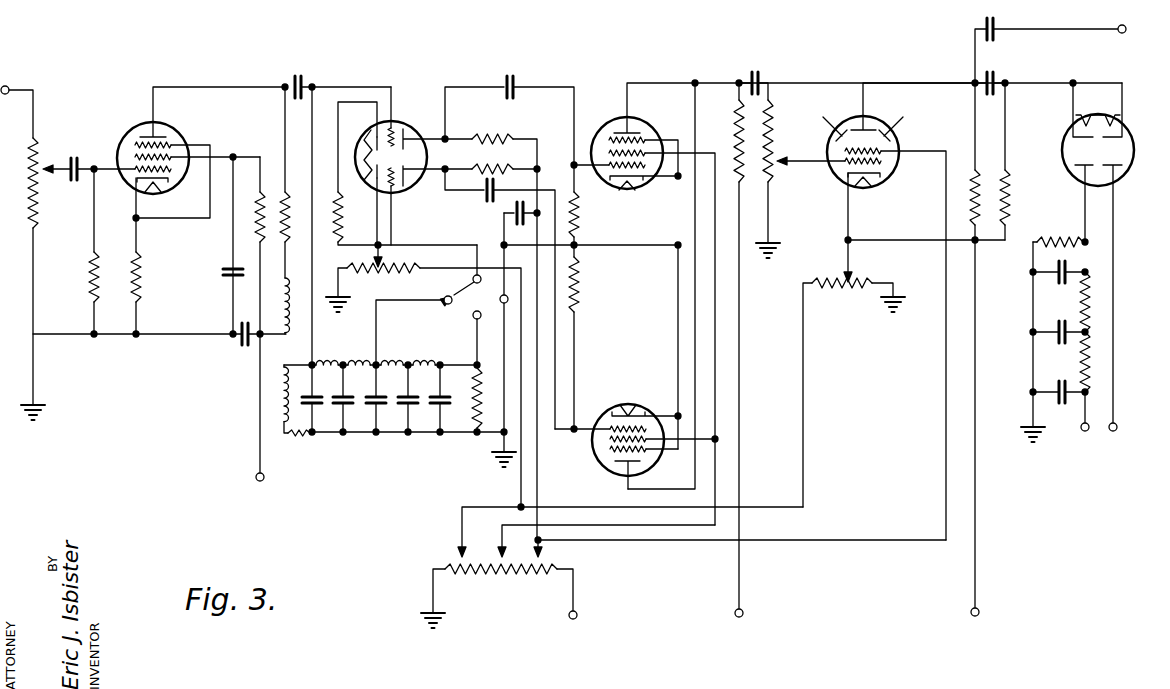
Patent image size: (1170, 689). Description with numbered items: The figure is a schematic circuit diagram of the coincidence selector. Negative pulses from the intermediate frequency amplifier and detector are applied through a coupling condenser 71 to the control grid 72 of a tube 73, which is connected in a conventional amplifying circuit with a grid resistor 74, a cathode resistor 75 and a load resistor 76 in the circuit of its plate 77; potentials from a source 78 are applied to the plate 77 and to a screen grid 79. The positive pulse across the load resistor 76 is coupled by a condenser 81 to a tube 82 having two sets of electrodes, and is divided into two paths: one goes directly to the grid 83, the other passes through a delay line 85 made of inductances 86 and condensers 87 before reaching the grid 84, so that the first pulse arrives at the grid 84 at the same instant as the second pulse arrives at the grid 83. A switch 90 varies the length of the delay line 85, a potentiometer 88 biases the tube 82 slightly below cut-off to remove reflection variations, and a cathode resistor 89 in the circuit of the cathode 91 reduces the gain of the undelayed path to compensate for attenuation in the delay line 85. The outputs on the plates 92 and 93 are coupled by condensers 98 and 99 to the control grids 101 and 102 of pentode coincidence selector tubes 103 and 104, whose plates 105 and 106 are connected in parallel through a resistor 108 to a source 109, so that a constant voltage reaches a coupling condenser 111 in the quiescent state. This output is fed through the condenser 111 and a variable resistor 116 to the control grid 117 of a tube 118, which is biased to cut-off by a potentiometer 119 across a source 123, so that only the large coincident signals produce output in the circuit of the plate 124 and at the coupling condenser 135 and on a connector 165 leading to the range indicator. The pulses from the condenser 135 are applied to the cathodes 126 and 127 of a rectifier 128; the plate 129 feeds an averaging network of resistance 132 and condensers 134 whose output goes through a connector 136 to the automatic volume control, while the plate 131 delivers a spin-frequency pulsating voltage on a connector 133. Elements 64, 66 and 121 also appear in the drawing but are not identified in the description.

The input terminal 64 is at (31, 88).
The volume control potentiometer 66 is at (40, 200).
The coupling condenser 71 is at (77, 152).
The control grid 72 is at (130, 180).
The tube 73 is at (147, 124).
The grid resistor 74 is at (82, 290).
The cathode resistor 75 is at (146, 290).
The load resistor 76 is at (287, 190).
The plate 77 is at (172, 132).
The source 78 is at (255, 478).
The screen grid 79 is at (204, 156).
The condenser 81 is at (302, 76).
The tube 82 is at (410, 127).
The grid 83 is at (396, 122).
The grid 84 is at (398, 190).
The delay line 85 is at (400, 281).
The inductances 86 is at (360, 360).
The condensers 87 is at (344, 408).
The potentiometer 88 is at (423, 376).
The cathode resistor 89 is at (342, 216).
The switch 90 is at (465, 283).
The cathode 91 is at (374, 128).
The plate 92 is at (411, 136).
The plate 93 is at (410, 178).
The condenser 98 is at (516, 80).
The condenser 99 is at (485, 199).
The control grid 101 is at (615, 180).
The control grid 102 is at (605, 435).
The coincidence selector tube 103 is at (613, 122).
The coincidence selector tube 104 is at (606, 472).
The plate 105 is at (640, 130).
The plate 106 is at (643, 472).
The resistor 108 is at (735, 145).
The source 109 is at (736, 619).
The coupling condenser 111 is at (759, 74).
The variable resistor 116 is at (775, 138).
The control grid 117 is at (843, 165).
The tube 118 is at (835, 120).
The potentiometer 119 is at (835, 300).
The cathode 121 is at (882, 188).
The source 123 is at (683, 566).
The plate 124 is at (876, 128).
The cathode 126 is at (1075, 138).
The cathode 127 is at (1120, 135).
The rectifier 128 is at (1065, 170).
The plate 129 is at (1070, 180).
The plate 131 is at (1120, 172).
The resistance 132 is at (1080, 296).
The connector 133 is at (1115, 326).
The condensers 134 is at (1080, 362).
The coupling condenser 135 is at (998, 78).
The connector 136 is at (1082, 433).
The connector 165 is at (1082, 34).